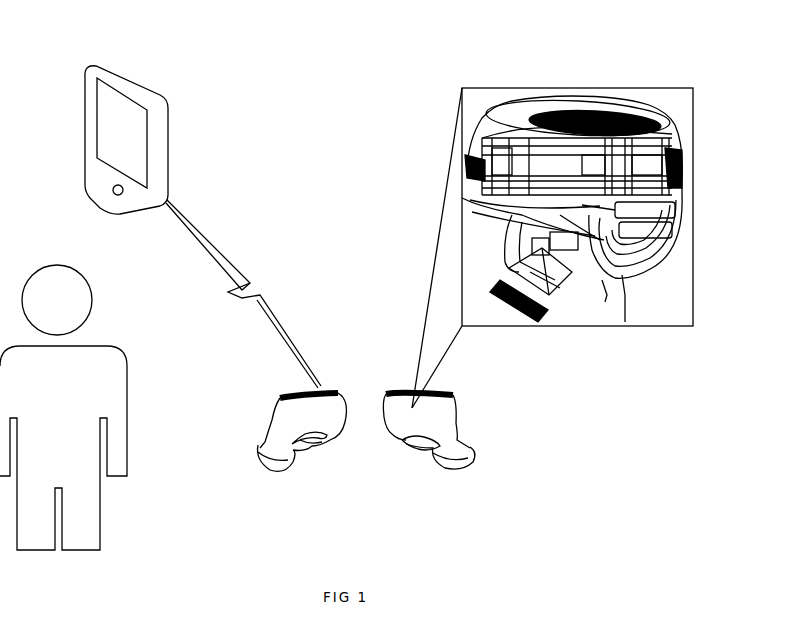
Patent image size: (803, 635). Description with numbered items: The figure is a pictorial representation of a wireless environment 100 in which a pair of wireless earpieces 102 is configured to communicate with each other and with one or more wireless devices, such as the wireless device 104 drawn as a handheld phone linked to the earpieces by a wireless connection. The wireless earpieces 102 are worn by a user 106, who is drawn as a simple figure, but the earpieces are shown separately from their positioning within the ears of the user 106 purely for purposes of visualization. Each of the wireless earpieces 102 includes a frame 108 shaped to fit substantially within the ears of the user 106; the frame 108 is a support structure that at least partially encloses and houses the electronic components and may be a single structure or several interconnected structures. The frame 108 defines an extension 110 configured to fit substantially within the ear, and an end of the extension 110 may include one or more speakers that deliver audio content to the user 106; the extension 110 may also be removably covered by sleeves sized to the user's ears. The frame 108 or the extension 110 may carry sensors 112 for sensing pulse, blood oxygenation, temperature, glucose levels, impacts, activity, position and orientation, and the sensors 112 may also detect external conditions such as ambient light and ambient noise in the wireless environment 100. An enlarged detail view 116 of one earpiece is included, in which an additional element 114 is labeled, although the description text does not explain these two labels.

The wireless environment 100 is at (330, 93).
The wireless earpieces 102 is at (509, 349).
The wireless device 104 is at (166, 108).
The user 106 is at (66, 392).
The frame 108 is at (453, 405).
The extension 110 is at (459, 440).
The sensors 112 is at (420, 447).
The ear tip retaining ridge 114 is at (605, 302).
The enlarged view of earbud 116 is at (577, 203).